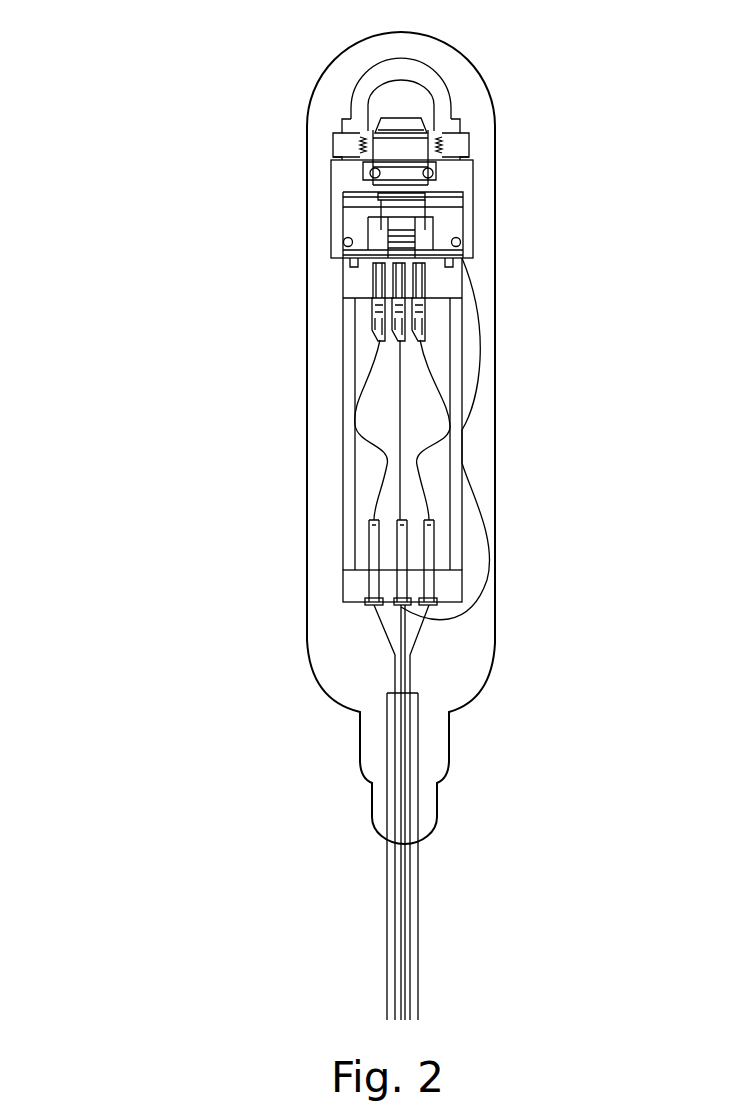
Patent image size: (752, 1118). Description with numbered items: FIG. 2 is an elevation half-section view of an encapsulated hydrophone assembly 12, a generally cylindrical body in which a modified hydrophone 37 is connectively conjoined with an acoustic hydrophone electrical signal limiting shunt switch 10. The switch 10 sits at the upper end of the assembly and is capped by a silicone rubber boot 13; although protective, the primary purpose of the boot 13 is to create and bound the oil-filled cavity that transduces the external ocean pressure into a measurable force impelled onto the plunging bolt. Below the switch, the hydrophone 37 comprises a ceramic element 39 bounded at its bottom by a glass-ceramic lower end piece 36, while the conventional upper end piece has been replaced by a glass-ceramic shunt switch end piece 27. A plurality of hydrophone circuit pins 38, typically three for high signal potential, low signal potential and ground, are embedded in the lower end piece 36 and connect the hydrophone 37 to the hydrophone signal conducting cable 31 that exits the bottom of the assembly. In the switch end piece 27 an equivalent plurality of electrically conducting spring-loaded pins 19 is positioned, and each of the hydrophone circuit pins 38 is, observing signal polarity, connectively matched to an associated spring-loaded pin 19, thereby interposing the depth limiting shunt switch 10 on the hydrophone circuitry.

The acoustic hydrophone electrical signal limiting shunt switch 10 is at (333, 97).
The encapsulated hydrophone assembly 12 is at (487, 88).
The silicone rubber boot 13 is at (375, 63).
The electrically conducting spring-loaded pins 19 is at (372, 283).
The glass-ceramic shunt switch end piece 27 is at (437, 283).
The hydrophone signal conducting cable 31 is at (418, 963).
The glass-ceramic lower end piece 36 is at (338, 587).
The hydrophone 37 is at (317, 347).
The hydrophone circuit pins 38 is at (368, 607).
The ceramic element 39 is at (338, 467).